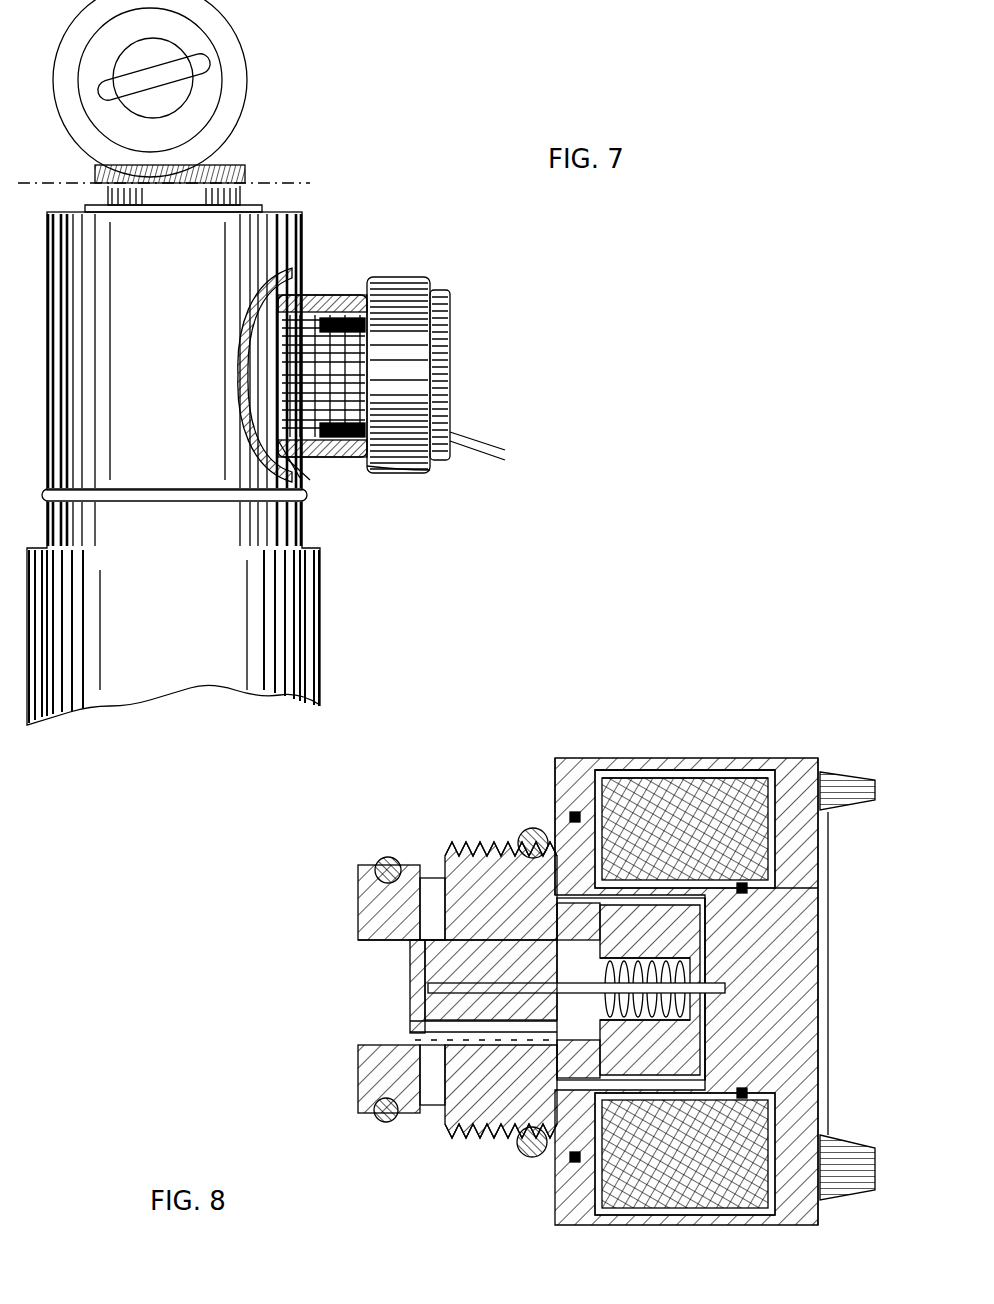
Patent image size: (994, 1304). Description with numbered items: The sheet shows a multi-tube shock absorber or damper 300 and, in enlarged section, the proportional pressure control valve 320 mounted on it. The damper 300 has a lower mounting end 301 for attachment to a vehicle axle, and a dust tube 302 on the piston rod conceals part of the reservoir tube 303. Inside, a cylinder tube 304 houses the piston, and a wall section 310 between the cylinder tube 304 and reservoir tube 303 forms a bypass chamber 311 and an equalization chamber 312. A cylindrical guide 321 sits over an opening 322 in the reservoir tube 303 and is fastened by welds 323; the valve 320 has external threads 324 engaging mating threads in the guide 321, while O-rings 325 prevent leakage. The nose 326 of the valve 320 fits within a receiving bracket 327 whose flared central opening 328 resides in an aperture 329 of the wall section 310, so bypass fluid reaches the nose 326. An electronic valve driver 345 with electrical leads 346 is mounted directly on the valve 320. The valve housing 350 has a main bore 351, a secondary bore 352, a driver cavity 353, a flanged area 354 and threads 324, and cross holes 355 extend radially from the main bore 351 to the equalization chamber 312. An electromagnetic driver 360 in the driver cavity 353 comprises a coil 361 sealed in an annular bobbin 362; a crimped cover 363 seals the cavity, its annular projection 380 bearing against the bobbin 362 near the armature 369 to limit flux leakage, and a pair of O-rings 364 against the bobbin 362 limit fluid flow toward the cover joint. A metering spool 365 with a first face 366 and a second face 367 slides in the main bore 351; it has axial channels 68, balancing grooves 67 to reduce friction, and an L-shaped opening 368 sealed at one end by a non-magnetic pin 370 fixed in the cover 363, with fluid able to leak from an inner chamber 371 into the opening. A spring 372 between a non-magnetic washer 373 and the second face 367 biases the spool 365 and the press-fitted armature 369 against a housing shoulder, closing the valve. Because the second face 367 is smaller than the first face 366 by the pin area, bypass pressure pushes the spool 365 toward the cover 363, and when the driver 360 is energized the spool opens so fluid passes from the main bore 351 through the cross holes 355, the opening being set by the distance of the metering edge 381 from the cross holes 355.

In FIG. 7, the multi-tube damper 300 is at (283, 119).
In FIG. 7, the lower mounting end 301 is at (248, 62).
In FIG. 7, the dust tube 302 is at (320, 648).
In FIG. 7, the reservoir tube 303 is at (164, 427).
In FIG. 7, the cylinder tube 304 is at (262, 432).
In FIG. 7, the wall section 310 is at (305, 275).
In FIG. 7, the bypass chamber 311 is at (268, 340).
In FIG. 7, the equalization chamber 312 is at (283, 455).
In FIG. 7, the uni-directional valve 320 is at (412, 272).
In FIG. 8, the uni-directional valve 320 is at (805, 758).
In FIG. 7, the cylindrical guide 321 is at (400, 468).
In FIG. 7, the opening 322 is at (305, 470).
In FIG. 7, the welds 323 is at (310, 478).
In FIG. 7, the external threads 324 is at (330, 288).
In FIG. 8, the external threads 324 is at (455, 1130).
In FIG. 7, the O-rings 325 is at (300, 290).
In FIG. 8, the O-rings 325 is at (388, 858).
In FIG. 7, the nose 326 is at (280, 365).
In FIG. 8, the nose 326 is at (358, 885).
In FIG. 7, the receiving bracket 327 is at (280, 323).
In FIG. 7, the flared central opening 328 is at (275, 415).
In FIG. 7, the aperture 329 is at (265, 390).
In FIG. 7, the electronic valve driver 345 is at (455, 322).
In FIG. 8, the electronic valve driver 345 is at (852, 1195).
In FIG. 7, the electrical leads 346 is at (508, 440).
In FIG. 8, the housing 350 is at (358, 1095).
In FIG. 8, the main bore 351 is at (358, 940).
In FIG. 8, the secondary bore 352 is at (555, 800).
In FIG. 8, the driver cavity 353 is at (760, 770).
In FIG. 8, the flanged area 354 is at (376, 1115).
In FIG. 8, the cross holes 355 is at (432, 880).
In FIG. 8, the electromagnetic driver 360 is at (710, 770).
In FIG. 8, the coil 361 is at (820, 845).
In FIG. 8, the annular bobbin 362 is at (790, 905).
In FIG. 8, the cover 363 is at (750, 975).
In FIG. 8, the O-rings 364 is at (560, 1215).
In FIG. 8, the metering spool 365 is at (410, 964).
In FIG. 8, the first face 366 is at (410, 992).
In FIG. 8, the second face 367 is at (535, 1157).
In FIG. 8, the L-shaped opening 368 is at (470, 990).
In FIG. 8, the armature 369 is at (680, 1040).
In FIG. 8, the pin 370 is at (690, 1000).
In FIG. 8, the inner chamber 371 is at (610, 775).
In FIG. 8, the spring 372 is at (705, 950).
In FIG. 8, the washer 373 is at (705, 985).
In FIG. 8, the annular projection 380 is at (700, 790).
In FIG. 8, the metering edge 381 is at (400, 1040).
In FIG. 8, the balancing grooves 67 is at (470, 865).
In FIG. 8, the axial channels 68 is at (470, 1130).